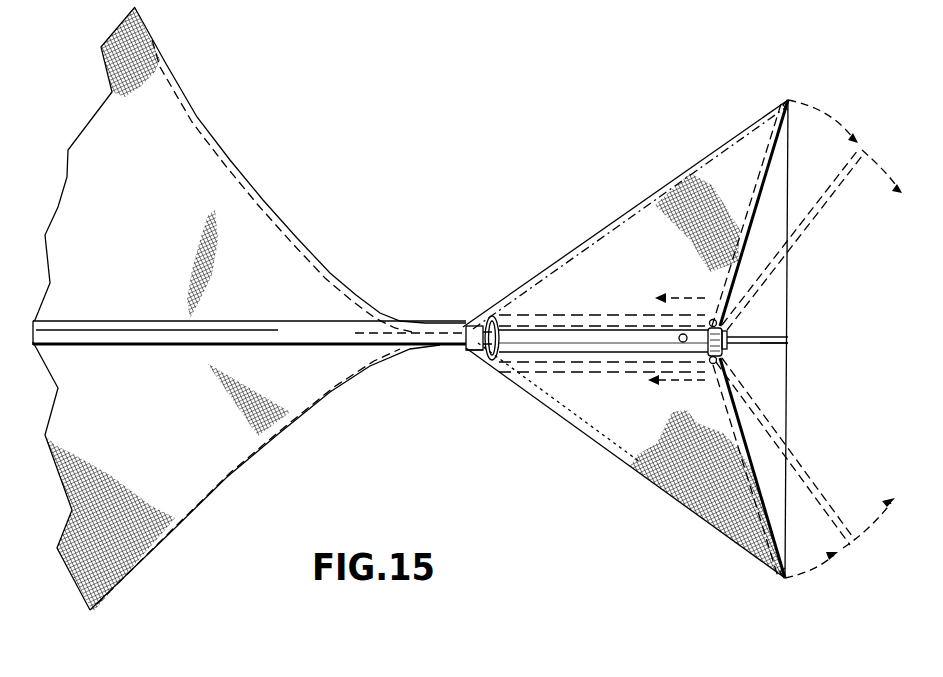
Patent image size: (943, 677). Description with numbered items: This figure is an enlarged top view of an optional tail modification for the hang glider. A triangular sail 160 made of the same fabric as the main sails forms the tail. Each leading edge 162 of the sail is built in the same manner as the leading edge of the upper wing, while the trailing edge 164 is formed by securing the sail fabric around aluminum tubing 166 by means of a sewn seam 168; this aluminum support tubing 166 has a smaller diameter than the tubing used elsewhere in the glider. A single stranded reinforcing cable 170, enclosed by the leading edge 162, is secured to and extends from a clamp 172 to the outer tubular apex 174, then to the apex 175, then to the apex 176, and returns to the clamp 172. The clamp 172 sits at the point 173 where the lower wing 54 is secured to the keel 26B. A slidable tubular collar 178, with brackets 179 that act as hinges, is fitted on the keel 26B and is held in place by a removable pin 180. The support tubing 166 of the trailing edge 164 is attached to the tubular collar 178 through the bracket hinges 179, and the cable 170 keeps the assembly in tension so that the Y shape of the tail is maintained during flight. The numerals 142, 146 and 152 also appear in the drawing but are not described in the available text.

The lower wing 54 is at (312, 288).
The keel 26B is at (353, 335).
The point 173 is at (452, 292).
The clamp 172 is at (486, 315).
The ring 146 is at (522, 331).
The slidable tubular collar 178 is at (462, 351).
The apex 175 is at (790, 343).
The shaft end 152 is at (766, 350).
The removable pin 180 is at (679, 337).
The brackets 179 is at (724, 325).
The upper wing panel 142 is at (618, 245).
The apex 176 is at (788, 98).
The trailing edge 164 is at (770, 132).
The aluminum tubing 166 is at (540, 362).
The sewn seam 168 is at (767, 520).
The single stranded reinforcing cable 170 is at (536, 404).
The leading edge 162 is at (588, 437).
The triangular sail 160 is at (638, 428).
The outer tubular apex 174 is at (784, 580).